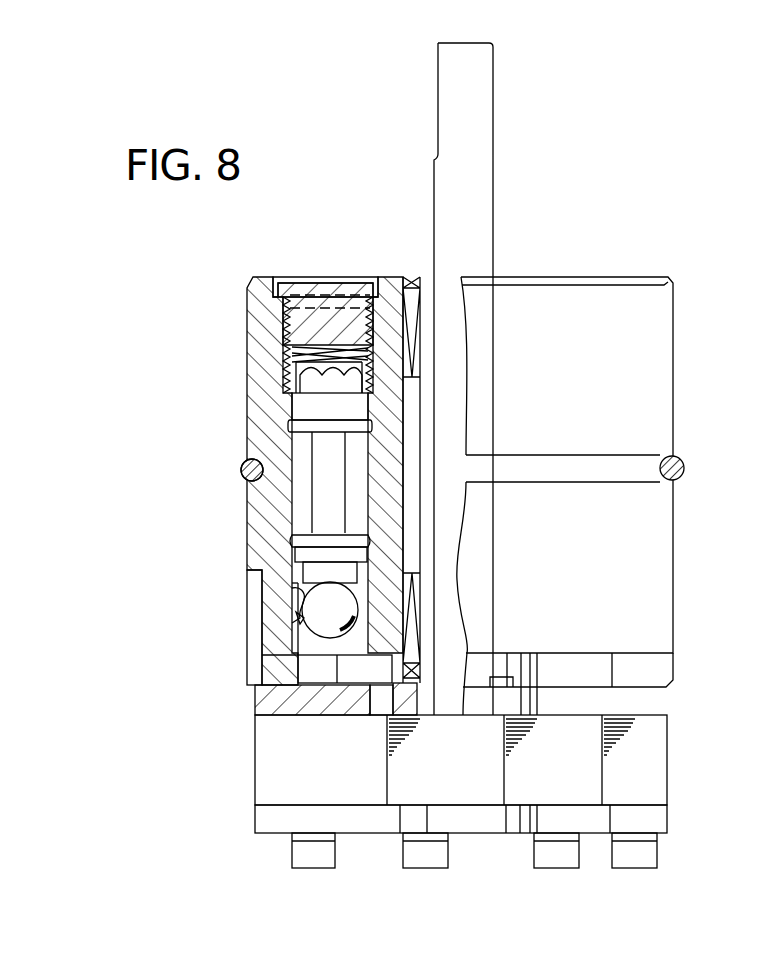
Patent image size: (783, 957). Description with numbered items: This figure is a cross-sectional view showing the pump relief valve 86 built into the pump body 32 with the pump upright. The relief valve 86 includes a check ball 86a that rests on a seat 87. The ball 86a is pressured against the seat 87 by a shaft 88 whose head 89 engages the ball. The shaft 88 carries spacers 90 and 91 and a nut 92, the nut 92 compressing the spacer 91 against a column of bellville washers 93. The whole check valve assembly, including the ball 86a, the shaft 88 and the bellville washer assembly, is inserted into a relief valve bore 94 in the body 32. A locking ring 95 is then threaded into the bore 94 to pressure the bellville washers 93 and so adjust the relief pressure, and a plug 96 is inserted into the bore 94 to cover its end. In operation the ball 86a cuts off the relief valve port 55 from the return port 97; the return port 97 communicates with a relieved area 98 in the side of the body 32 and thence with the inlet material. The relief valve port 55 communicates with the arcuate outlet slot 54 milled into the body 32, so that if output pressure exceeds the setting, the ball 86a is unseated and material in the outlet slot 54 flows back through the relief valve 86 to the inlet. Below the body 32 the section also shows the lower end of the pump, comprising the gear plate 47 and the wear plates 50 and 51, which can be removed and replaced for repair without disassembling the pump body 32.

The pump body 32 is at (673, 340).
The gear plate 47 is at (287, 768).
The wear plate 50 is at (308, 656).
The wear plate 51 is at (258, 820).
The arcuate outlet slot 54 is at (345, 698).
The relief valve port 55 is at (256, 650).
The relief valve 86 is at (265, 516).
The check ball 86a is at (303, 588).
The seat 87 is at (302, 622).
The shaft 88 is at (282, 490).
The head 89 is at (300, 576).
The spacer 90 is at (283, 541).
The spacer 91 is at (303, 410).
The nut 92 is at (320, 352).
The bellville washers 93 is at (300, 440).
The relief valve bore 94 is at (320, 495).
The locking ring 95 is at (300, 384).
The plug 96 is at (320, 300).
The return port 97 is at (301, 608).
The relieved area 98 is at (300, 668).